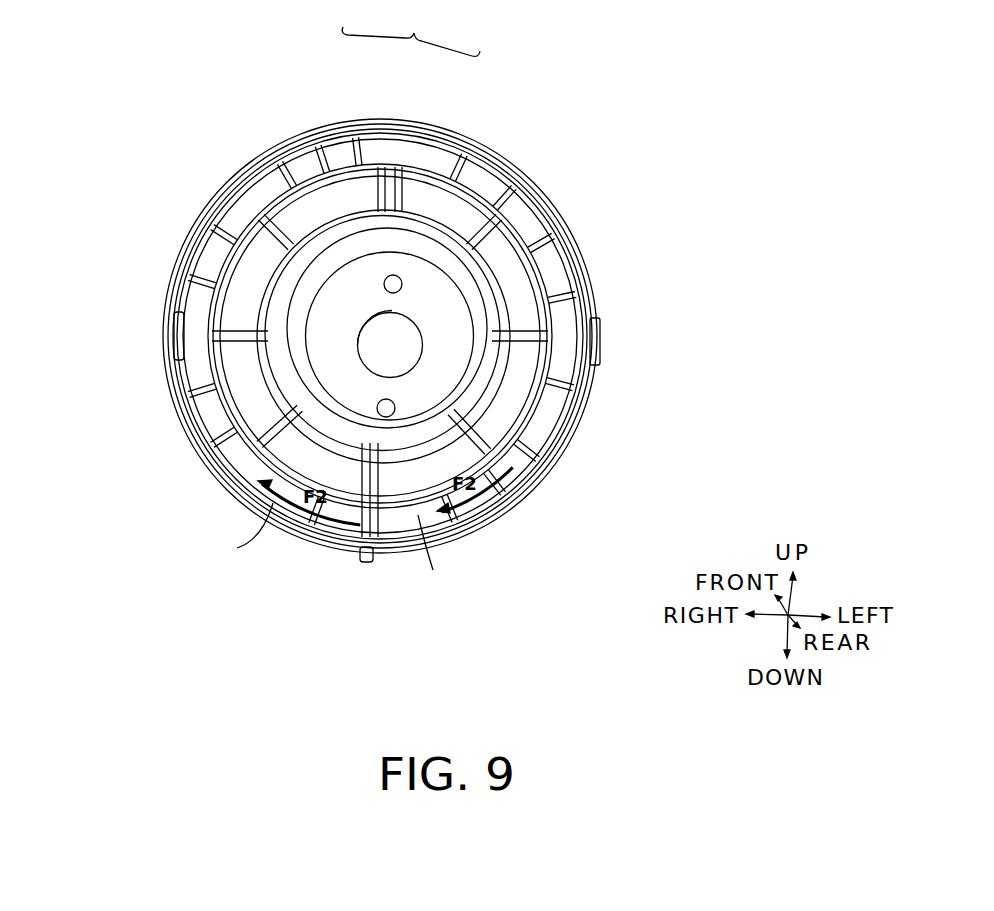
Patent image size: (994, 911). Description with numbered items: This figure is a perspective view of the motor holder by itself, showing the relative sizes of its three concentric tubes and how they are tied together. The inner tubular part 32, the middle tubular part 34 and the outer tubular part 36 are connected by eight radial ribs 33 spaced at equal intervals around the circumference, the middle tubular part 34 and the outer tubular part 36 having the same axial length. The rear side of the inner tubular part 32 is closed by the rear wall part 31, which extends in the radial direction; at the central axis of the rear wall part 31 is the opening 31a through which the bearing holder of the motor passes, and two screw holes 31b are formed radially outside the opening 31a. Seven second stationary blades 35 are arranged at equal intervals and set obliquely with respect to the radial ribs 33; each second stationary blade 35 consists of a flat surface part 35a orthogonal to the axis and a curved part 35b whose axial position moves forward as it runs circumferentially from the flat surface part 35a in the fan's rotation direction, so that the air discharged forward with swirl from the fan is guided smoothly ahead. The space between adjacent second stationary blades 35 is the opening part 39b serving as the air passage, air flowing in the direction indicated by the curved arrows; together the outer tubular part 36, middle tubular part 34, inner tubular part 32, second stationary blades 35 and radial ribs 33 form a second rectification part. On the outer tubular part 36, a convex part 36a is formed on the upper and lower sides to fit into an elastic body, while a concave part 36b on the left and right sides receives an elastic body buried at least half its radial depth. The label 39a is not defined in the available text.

The rear wall part 31 is at (428, 377).
The opening 31a is at (355, 358).
The screw holes 31b is at (384, 285).
The inner tubular part 32 is at (480, 288).
The radial ribs 33 is at (185, 305).
The middle tubular part 34 is at (490, 153).
The second stationary blade 35 is at (336, 305).
The flat surface part 35a is at (345, 154).
The curved part 35b is at (405, 154).
The outer tubular part 36 is at (518, 495).
The convex part 36a is at (598, 345).
The concave part 36b is at (363, 563).
The partition wall 39a is at (253, 280).
The opening part 39b is at (318, 161).